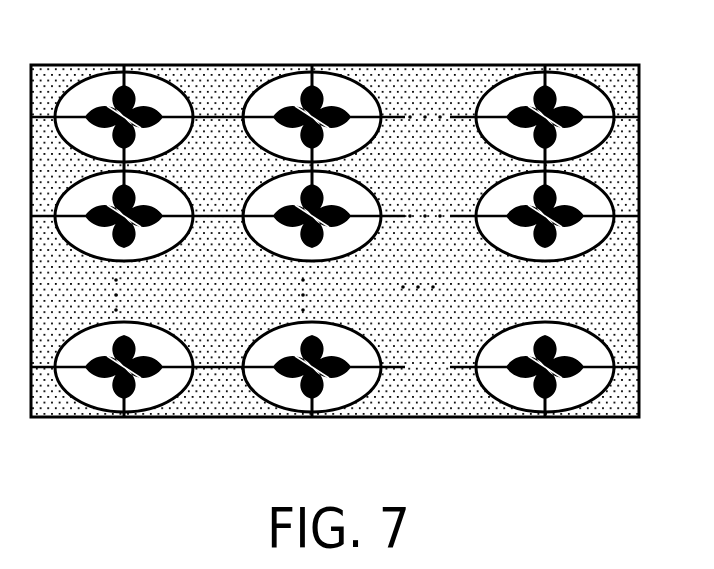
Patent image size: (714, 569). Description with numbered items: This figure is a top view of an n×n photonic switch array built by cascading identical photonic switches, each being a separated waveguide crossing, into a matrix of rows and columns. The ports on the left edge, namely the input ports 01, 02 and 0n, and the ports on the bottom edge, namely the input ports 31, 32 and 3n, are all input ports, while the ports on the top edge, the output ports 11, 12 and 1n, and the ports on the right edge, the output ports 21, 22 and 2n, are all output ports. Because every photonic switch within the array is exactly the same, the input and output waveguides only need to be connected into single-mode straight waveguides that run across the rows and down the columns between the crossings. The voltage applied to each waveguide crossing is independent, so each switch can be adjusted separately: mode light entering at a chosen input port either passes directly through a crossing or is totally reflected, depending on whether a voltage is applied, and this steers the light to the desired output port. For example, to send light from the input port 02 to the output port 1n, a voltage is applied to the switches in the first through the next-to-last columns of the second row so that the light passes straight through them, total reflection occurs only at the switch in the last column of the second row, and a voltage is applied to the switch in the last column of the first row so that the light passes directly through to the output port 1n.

The input port 01 is at (204, 120).
The input port 02 is at (204, 220).
The input port 0n is at (206, 367).
The output port 11 is at (125, 117).
The output port 12 is at (313, 114).
The output port 1n is at (546, 114).
The output port 21 is at (556, 122).
The output port 22 is at (556, 223).
The output port 2n is at (556, 373).
The input port 31 is at (126, 417).
The input port 32 is at (313, 419).
The input port 3n is at (546, 418).